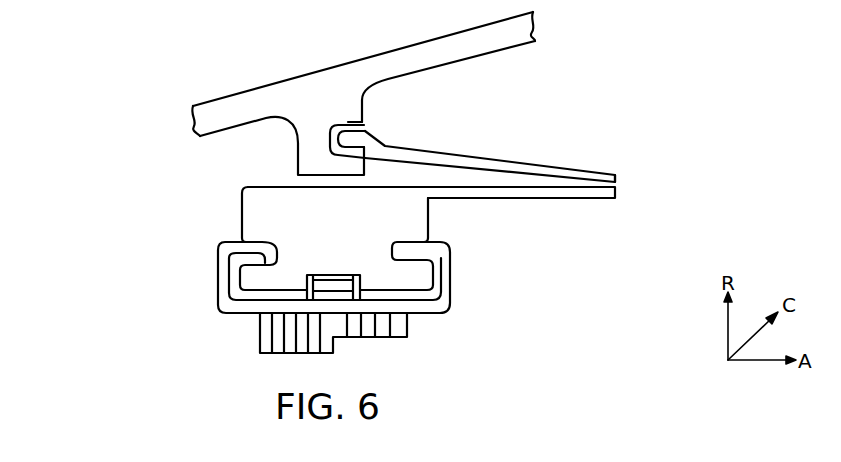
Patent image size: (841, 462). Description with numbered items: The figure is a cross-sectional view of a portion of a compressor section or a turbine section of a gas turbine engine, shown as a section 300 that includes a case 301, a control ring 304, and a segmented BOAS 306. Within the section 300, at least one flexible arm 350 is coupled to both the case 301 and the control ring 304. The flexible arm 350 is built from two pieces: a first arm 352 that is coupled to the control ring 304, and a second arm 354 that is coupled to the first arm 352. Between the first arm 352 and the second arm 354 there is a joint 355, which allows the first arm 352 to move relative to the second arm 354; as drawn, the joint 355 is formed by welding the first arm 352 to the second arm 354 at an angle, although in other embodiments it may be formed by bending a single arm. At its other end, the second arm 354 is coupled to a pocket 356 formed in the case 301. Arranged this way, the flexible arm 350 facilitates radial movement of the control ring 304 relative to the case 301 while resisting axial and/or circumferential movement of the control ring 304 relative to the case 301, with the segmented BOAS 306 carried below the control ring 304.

The section 300 is at (68, 99).
The case 301 is at (337, 70).
The control ring 304 is at (421, 218).
The segmented BOAS 306 is at (443, 303).
The flexible arm 350 is at (484, 150).
The first arm 352 is at (510, 200).
The second arm 354 is at (585, 171).
The joint 355 is at (615, 186).
The pocket 356 is at (350, 126).